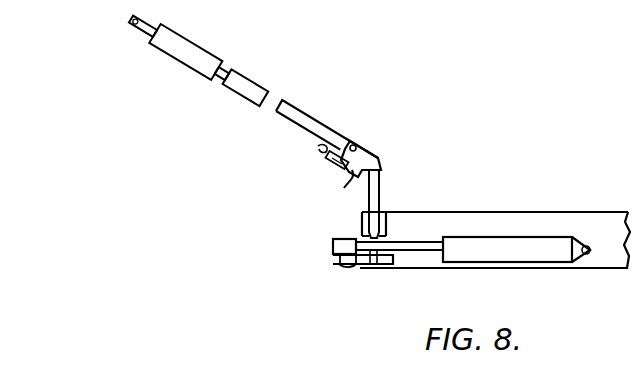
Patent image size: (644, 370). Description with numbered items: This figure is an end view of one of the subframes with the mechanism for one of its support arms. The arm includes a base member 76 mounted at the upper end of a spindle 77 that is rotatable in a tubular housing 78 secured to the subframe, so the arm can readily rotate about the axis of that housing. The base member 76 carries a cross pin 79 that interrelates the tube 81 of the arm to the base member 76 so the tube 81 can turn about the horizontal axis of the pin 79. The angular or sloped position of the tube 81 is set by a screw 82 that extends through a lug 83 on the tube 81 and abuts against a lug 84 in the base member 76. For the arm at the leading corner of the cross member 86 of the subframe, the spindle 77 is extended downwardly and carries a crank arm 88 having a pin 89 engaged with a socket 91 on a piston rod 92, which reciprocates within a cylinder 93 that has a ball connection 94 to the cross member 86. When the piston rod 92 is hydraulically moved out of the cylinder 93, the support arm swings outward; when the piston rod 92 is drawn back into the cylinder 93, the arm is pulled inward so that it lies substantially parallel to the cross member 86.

The base member 76 is at (375, 150).
The spindle 77 is at (381, 172).
The tubular housing 78 is at (386, 212).
The cross pin 79 is at (351, 145).
The tube 81 is at (300, 110).
The screw 82 is at (318, 147).
The lug 83 is at (323, 172).
The lug 84 is at (344, 188).
The cross member 86 is at (150, 39).
The crank arm 88 is at (350, 265).
The pin 89 is at (340, 257).
The socket 91 is at (333, 243).
The piston rod 92 is at (406, 252).
The cylinder 93 is at (476, 250).
The ball connection 94 is at (586, 255).